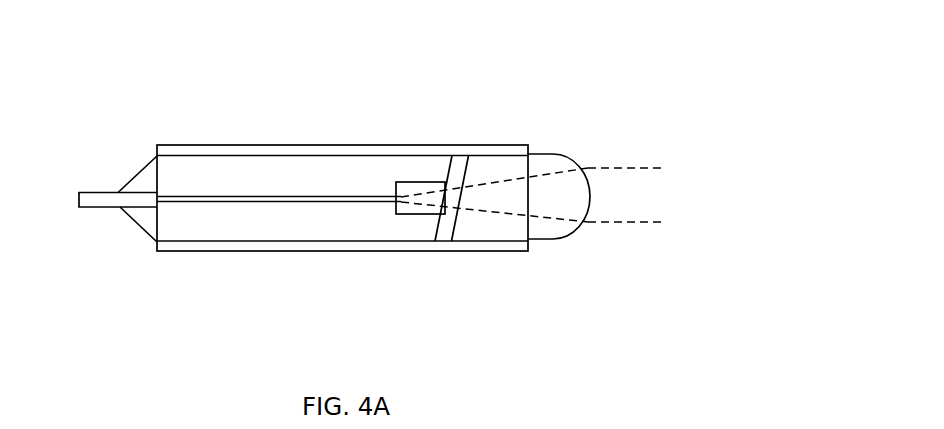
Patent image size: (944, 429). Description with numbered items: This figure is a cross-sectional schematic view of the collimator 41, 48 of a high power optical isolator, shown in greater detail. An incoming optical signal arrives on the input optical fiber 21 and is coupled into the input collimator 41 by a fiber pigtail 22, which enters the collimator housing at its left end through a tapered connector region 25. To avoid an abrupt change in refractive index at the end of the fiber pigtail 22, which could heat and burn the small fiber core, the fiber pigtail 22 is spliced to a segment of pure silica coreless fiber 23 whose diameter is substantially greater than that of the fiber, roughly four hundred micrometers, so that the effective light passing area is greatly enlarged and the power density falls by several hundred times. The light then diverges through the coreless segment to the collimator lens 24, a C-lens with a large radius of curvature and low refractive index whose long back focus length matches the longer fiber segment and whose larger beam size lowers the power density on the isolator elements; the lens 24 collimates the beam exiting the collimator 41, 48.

The input optical fiber 21 is at (102, 192).
The fiber pigtail 22 is at (252, 195).
The pure silica coreless fiber segment 23 is at (416, 182).
The collimator lens 24 is at (543, 160).
The fiber ferrule / cone connector 25 is at (146, 222).
The input collimator 41 is at (349, 157).
The probe / light emitting device 48 is at (657, 50).